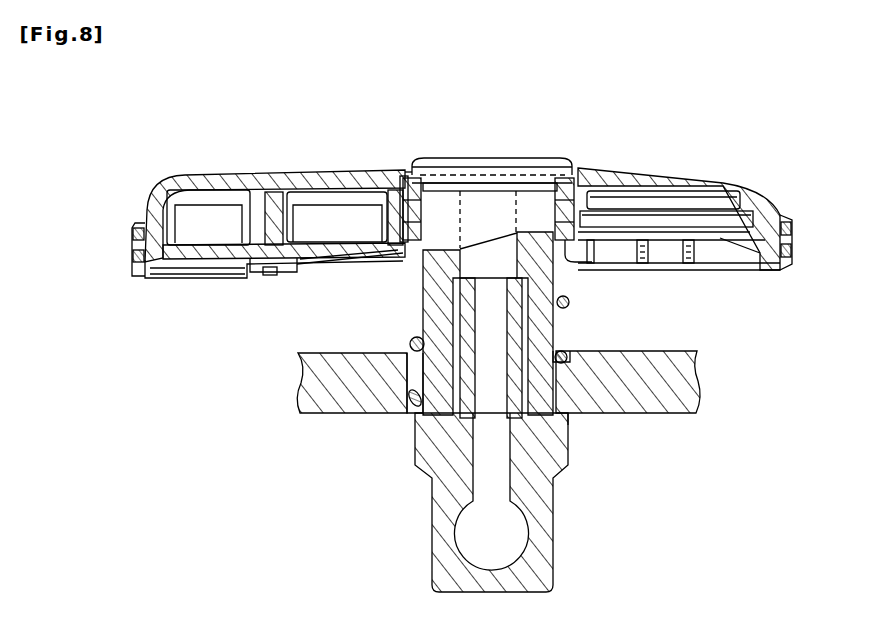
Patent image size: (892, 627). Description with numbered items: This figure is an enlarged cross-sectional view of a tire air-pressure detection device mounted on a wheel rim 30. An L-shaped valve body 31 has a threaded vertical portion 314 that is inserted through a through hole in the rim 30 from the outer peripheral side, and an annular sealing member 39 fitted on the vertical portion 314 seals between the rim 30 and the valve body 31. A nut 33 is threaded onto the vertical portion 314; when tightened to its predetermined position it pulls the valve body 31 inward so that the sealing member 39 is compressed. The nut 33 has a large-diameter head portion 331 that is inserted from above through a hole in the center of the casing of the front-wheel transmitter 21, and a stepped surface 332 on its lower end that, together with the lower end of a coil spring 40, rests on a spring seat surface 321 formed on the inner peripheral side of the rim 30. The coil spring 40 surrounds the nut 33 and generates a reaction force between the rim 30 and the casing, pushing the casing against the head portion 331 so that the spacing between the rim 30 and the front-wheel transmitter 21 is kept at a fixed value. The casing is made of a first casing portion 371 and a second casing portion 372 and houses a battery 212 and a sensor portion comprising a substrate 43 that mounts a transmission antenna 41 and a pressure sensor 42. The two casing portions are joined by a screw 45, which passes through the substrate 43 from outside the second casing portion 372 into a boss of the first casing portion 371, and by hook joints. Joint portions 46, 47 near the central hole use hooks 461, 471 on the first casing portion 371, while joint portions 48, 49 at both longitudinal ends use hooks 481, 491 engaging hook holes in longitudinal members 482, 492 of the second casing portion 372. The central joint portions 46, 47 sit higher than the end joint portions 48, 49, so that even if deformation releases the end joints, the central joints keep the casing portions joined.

The front-wheel transmitter 21 is at (656, 160).
The battery 212 is at (717, 196).
The rim 30 is at (342, 410).
The valve body 31 is at (560, 470).
The vertical portion 314 is at (556, 338).
The spring seat surface 321 is at (573, 417).
The nut 33 is at (423, 303).
The head portion 331 is at (541, 185).
The stepped surface 332 is at (553, 341).
The first casing portion 371 is at (303, 170).
The second casing portion 372 is at (192, 280).
The sealing member 39 is at (432, 462).
The coil spring 40 is at (569, 302).
The transmission antenna 41 is at (193, 218).
The pressure sensor 42 is at (373, 214).
The substrate 43 is at (334, 260).
The screw 45 is at (271, 276).
The joint portion 46 is at (438, 200).
The hook 461 is at (404, 172).
The joint portion 47 is at (517, 166).
The hook 471 is at (584, 172).
The joint portion 48 is at (132, 241).
The hook 481 is at (136, 256).
The longitudinal member 482 is at (132, 228).
The joint portion 49 is at (786, 248).
The hook 491 is at (786, 240).
The longitudinal member 492 is at (782, 222).